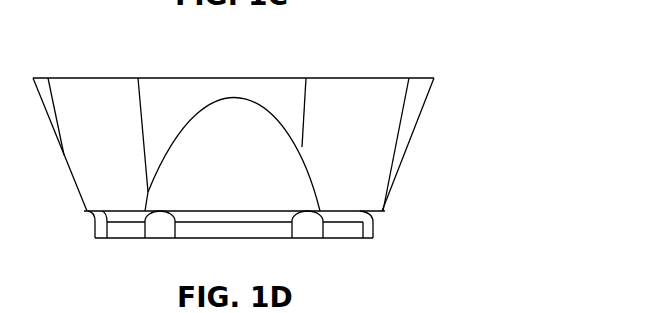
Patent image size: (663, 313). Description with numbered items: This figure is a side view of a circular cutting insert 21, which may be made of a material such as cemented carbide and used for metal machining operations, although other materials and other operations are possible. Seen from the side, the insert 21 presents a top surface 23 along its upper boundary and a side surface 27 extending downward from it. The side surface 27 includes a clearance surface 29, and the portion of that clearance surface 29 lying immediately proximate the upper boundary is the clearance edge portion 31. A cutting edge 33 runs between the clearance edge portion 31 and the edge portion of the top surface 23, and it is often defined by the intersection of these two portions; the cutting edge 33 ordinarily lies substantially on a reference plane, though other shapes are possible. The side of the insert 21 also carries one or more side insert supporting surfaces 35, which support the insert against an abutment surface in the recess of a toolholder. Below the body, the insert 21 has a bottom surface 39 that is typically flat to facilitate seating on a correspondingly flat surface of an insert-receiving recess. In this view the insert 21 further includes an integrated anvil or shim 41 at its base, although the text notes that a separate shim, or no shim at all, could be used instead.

The cutting insert 21 is at (460, 60).
The top surface 23 is at (313, 80).
The side surface 27 is at (422, 158).
The clearance surface 29 is at (295, 120).
The clearance edge portion 31 is at (273, 100).
The cutting edge 33 is at (142, 80).
The side insert supporting surface 35 is at (363, 154).
The bottom surface 39 is at (348, 233).
The integrated anvil or shim 41 is at (368, 213).